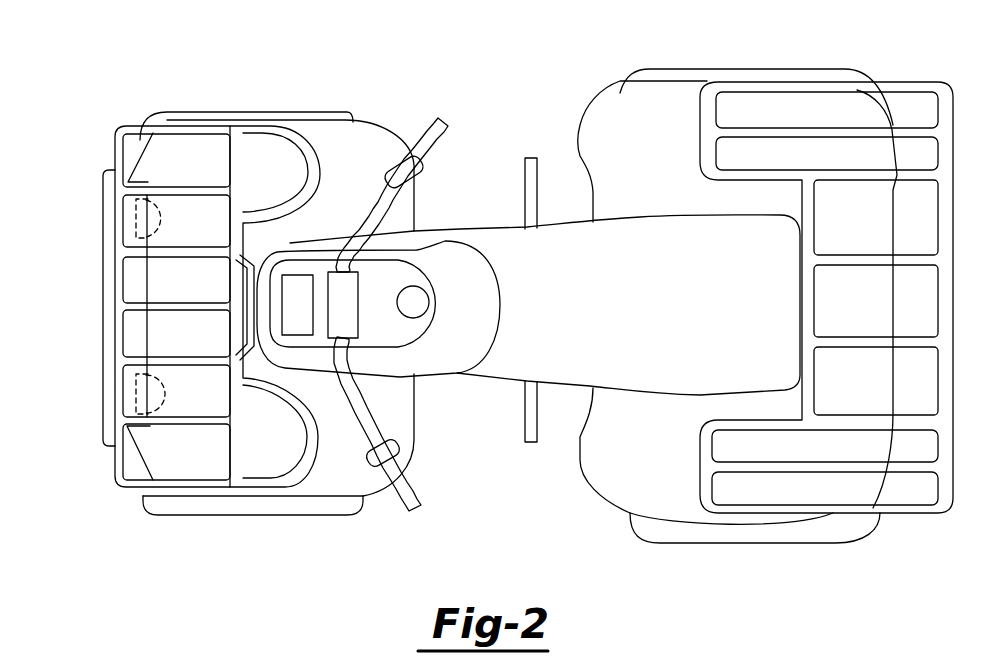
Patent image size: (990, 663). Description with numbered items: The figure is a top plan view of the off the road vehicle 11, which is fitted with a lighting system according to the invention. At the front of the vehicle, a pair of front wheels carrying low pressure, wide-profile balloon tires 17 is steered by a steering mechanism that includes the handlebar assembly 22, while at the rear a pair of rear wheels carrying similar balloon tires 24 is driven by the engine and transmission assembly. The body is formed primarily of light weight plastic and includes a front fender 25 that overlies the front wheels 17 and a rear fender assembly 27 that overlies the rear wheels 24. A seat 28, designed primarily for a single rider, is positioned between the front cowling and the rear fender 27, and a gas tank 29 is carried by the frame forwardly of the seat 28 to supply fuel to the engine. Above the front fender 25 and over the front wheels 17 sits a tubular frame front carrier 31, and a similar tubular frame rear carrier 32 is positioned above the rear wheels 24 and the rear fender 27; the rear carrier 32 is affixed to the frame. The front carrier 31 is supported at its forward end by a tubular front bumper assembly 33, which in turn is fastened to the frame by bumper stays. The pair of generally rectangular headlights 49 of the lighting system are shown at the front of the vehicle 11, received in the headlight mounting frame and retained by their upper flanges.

The off the road vehicle 11 is at (472, 163).
The front wheel balloon tires 17 is at (264, 97).
The handlebar assembly 22 is at (398, 432).
The rear wheel balloon tires 24 is at (820, 63).
The front fender 25 is at (340, 118).
The rear fender assembly 27 is at (678, 88).
The seat 28 is at (573, 385).
The gas tank 29 is at (420, 262).
The front carrier 31 is at (197, 126).
The rear carrier 32 is at (937, 82).
The front bumper assembly 33 is at (103, 305).
The headlights 49 is at (134, 217).